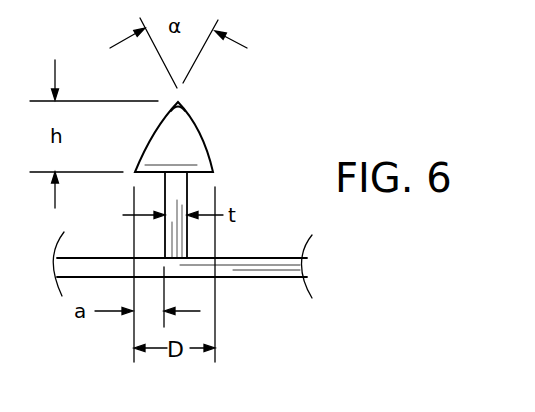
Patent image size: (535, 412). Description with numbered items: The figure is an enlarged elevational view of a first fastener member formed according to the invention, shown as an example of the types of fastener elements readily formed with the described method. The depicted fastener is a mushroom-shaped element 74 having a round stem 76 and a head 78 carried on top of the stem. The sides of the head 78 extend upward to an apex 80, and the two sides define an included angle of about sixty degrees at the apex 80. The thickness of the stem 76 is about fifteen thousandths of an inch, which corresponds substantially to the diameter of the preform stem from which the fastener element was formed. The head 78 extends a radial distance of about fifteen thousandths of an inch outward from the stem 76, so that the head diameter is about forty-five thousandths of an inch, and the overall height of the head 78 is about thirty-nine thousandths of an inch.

The mushroom-shaped element 74 is at (224, 164).
The round stem 76 is at (187, 244).
The head 78 is at (213, 158).
The apex 80 is at (177, 100).